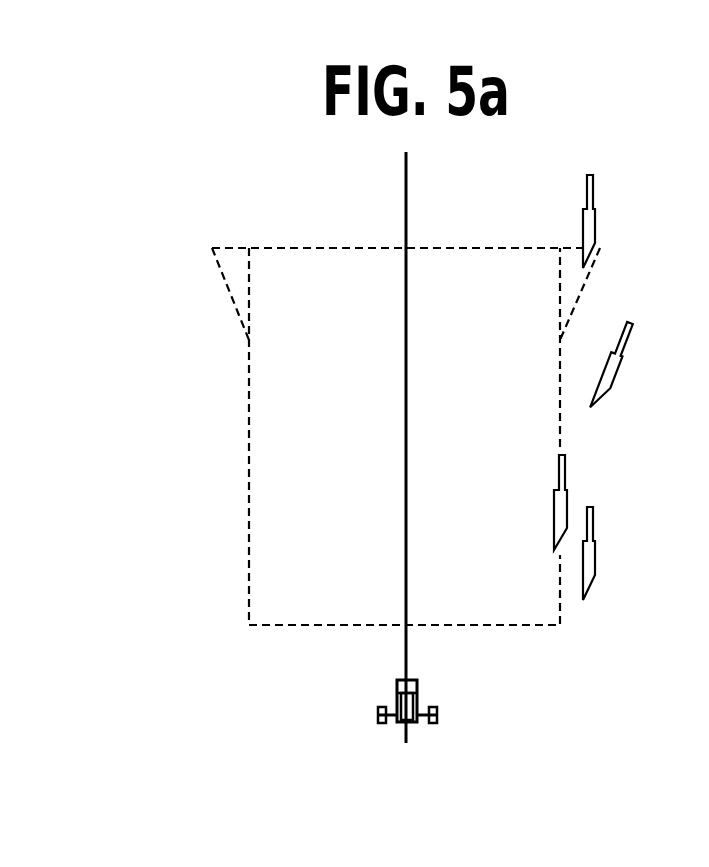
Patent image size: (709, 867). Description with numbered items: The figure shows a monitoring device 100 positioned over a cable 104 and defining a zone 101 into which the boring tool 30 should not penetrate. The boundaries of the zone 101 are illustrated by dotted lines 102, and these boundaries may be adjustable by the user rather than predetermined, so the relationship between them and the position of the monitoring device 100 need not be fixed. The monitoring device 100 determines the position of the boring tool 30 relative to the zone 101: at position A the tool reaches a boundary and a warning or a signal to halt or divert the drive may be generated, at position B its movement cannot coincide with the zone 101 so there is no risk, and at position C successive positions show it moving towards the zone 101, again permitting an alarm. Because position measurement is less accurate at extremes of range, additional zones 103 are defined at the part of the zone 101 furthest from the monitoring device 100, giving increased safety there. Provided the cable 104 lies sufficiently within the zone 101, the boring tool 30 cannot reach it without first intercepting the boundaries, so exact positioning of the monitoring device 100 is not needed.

The boring tool 30 is at (596, 220).
The monitoring device 100 is at (399, 722).
The zone 101 is at (347, 582).
The dotted lines 102 is at (250, 557).
The additional zones 103 is at (227, 290).
The cable 104 is at (405, 193).